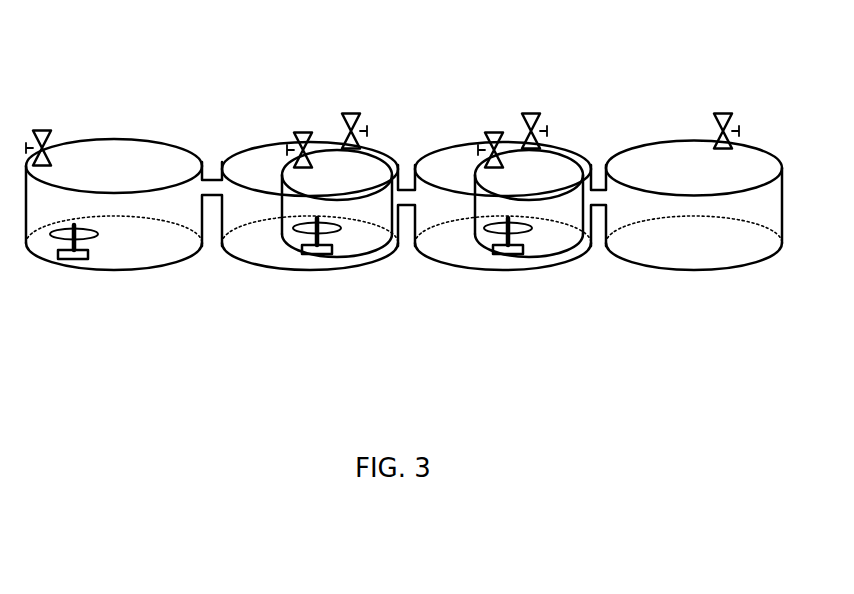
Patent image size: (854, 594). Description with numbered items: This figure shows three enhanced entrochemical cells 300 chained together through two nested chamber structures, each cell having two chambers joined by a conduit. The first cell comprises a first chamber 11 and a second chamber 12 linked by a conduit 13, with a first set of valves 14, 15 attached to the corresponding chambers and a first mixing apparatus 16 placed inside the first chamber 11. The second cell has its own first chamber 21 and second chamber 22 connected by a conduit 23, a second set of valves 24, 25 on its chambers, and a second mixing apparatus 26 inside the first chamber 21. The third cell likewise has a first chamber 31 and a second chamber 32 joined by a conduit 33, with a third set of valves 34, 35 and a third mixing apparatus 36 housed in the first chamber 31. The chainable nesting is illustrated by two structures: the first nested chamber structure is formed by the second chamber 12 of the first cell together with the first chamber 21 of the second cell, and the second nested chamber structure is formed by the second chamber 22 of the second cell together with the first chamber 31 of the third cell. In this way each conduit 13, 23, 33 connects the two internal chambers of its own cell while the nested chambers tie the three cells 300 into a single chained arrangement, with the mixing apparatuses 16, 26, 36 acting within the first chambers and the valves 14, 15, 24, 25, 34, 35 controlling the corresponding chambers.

The enhanced entrochemical cells 300 is at (409, 398).
The first chamber 11 is at (113, 250).
The second chamber 12 is at (262, 250).
The conduit 13 is at (212, 170).
The valve 14 is at (47, 128).
The valve 15 is at (350, 112).
The first mixing apparatus 16 is at (67, 257).
The first chamber 21 is at (342, 238).
The second chamber 22 is at (453, 258).
The conduit 23 is at (406, 187).
The valve 24 is at (300, 130).
The valve 25 is at (530, 112).
The second mixing apparatus 26 is at (311, 255).
The first chamber 31 is at (543, 245).
The second chamber 32 is at (643, 258).
The conduit 33 is at (594, 188).
The valve 34 is at (492, 130).
The valve 35 is at (722, 112).
The third mixing apparatus 36 is at (503, 253).